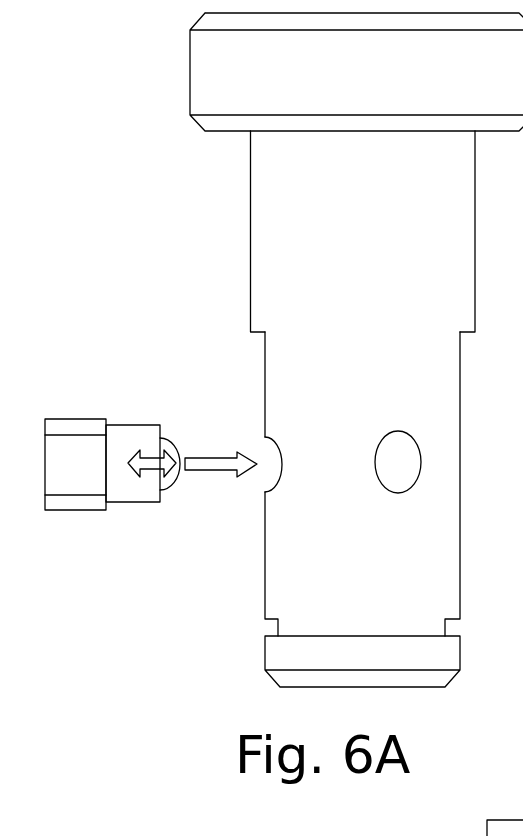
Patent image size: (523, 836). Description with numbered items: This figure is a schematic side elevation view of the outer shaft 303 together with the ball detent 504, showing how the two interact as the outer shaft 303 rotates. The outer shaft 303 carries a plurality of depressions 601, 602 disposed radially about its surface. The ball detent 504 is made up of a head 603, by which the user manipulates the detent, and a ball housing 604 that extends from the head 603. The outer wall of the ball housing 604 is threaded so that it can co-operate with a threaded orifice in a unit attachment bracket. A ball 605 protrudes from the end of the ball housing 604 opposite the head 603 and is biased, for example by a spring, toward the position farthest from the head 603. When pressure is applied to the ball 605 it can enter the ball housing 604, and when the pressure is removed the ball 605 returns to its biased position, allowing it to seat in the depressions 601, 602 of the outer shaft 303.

The outer shaft 303 is at (256, 217).
The ball detent 504 is at (108, 419).
The depression 601 is at (282, 465).
The depression 602 is at (418, 463).
The head 603 is at (72, 503).
The ball housing 604 is at (124, 425).
The ball 605 is at (163, 493).